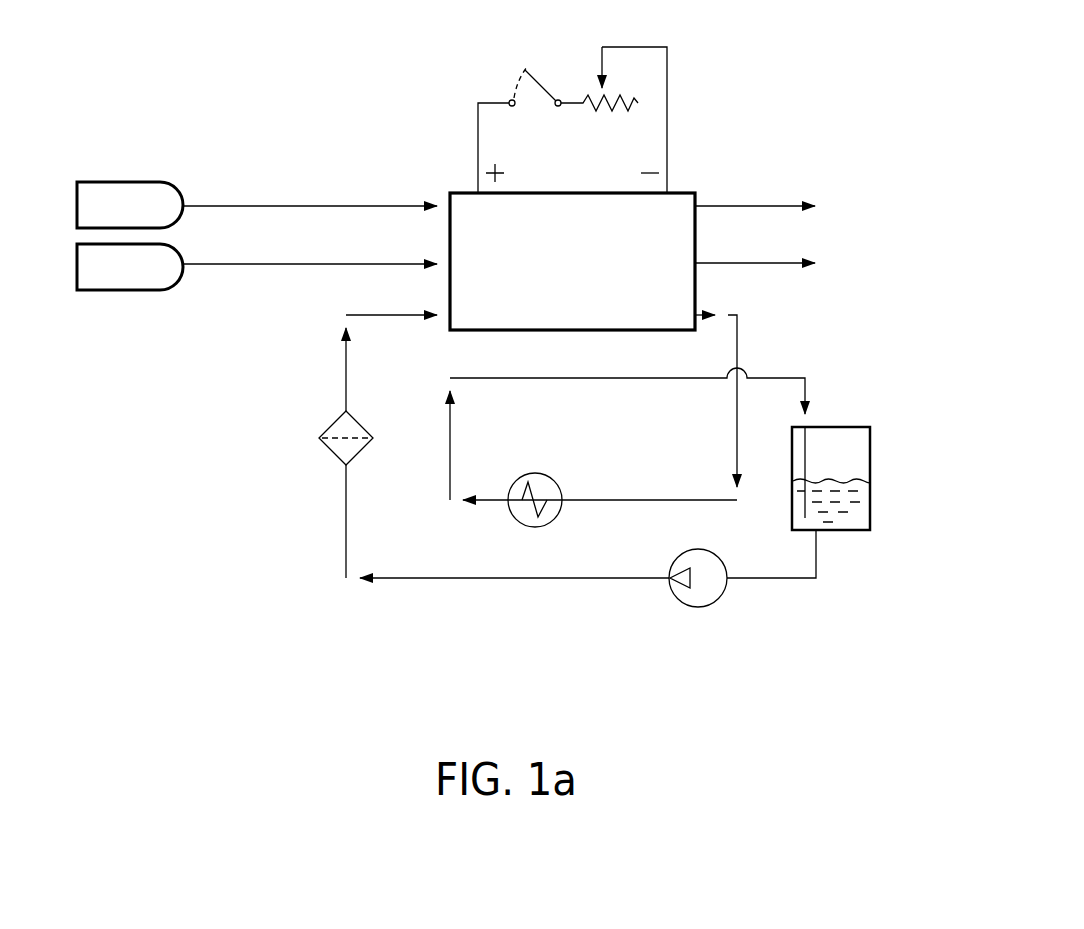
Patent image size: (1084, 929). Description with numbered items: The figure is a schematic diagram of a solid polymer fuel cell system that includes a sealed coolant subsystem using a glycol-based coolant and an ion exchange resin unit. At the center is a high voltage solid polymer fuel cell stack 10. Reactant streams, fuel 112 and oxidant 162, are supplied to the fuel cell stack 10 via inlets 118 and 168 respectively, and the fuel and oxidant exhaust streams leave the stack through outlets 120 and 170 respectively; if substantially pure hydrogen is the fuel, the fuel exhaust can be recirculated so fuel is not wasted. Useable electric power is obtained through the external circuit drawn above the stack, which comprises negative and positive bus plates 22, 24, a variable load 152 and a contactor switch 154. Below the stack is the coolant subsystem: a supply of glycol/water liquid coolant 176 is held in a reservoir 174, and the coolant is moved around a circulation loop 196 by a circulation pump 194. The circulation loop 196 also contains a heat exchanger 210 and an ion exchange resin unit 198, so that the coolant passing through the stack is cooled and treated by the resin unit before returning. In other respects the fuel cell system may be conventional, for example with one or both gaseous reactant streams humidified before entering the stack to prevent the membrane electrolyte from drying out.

The solid polymer fuel cell stack 10 is at (593, 192).
The negative bus plate 22 is at (667, 172).
The positive bus plate 24 is at (478, 170).
The fuel 112 is at (137, 182).
The inlet 118 is at (318, 204).
The outlet 120 is at (772, 206).
The variable load 152 is at (582, 50).
The contactor switch 154 is at (496, 76).
The oxidant 162 is at (145, 291).
The inlet 168 is at (318, 267).
The outlet 170 is at (770, 263).
The reservoir 174 is at (850, 455).
The glycol/water liquid coolant 176 is at (850, 507).
The circulation pump 194 is at (697, 608).
The circulation loop 196 is at (475, 580).
The ion exchange resin unit 198 is at (330, 455).
The heat exchanger 210 is at (530, 478).